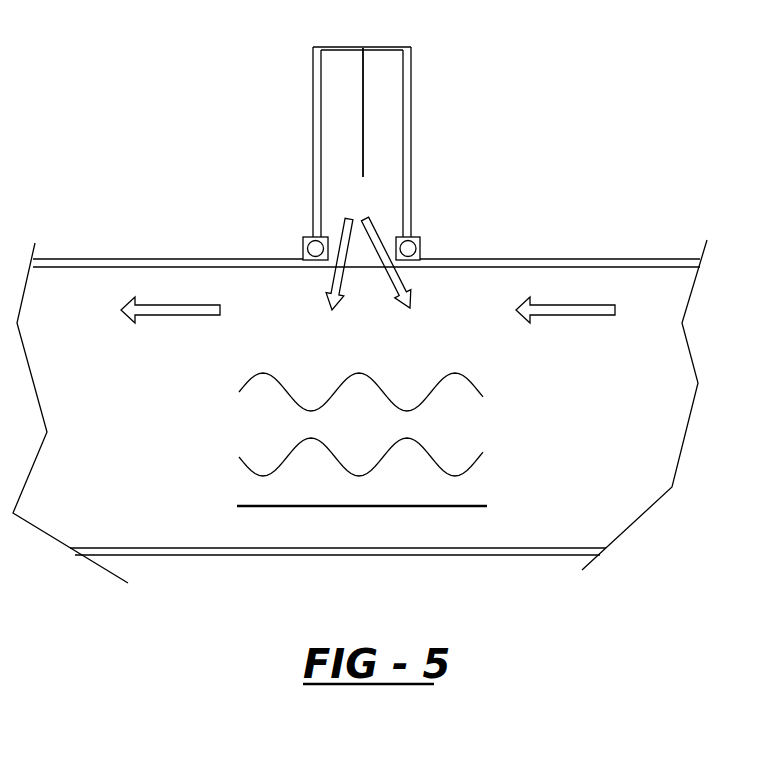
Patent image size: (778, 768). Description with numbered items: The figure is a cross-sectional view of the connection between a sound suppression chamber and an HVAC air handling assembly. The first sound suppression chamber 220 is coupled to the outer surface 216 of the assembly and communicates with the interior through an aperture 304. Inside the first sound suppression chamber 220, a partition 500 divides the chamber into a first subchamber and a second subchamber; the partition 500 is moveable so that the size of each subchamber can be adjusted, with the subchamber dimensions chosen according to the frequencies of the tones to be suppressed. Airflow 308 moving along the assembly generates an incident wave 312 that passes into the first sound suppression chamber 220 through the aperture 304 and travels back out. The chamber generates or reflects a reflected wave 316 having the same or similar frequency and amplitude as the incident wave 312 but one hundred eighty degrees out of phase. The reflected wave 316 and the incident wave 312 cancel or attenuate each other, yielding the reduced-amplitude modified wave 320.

The outer surface 216 is at (140, 259).
The first sound suppression chamber 220 is at (411, 97).
The aperture 304 is at (396, 240).
The airflow 308 is at (185, 320).
The incident wave 312 is at (483, 386).
The reflected wave 316 is at (483, 463).
The modified wave 320 is at (482, 505).
The partition 500 is at (360, 72).